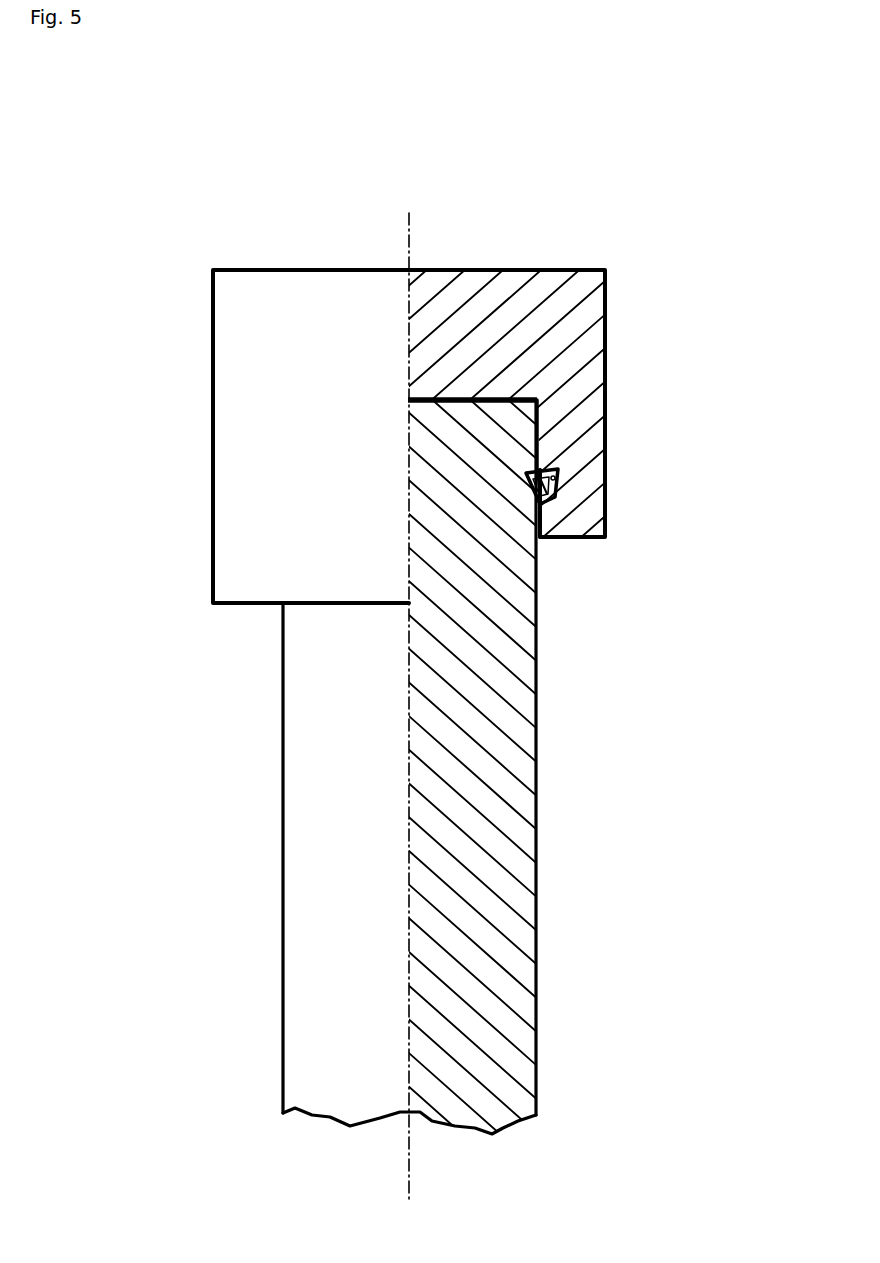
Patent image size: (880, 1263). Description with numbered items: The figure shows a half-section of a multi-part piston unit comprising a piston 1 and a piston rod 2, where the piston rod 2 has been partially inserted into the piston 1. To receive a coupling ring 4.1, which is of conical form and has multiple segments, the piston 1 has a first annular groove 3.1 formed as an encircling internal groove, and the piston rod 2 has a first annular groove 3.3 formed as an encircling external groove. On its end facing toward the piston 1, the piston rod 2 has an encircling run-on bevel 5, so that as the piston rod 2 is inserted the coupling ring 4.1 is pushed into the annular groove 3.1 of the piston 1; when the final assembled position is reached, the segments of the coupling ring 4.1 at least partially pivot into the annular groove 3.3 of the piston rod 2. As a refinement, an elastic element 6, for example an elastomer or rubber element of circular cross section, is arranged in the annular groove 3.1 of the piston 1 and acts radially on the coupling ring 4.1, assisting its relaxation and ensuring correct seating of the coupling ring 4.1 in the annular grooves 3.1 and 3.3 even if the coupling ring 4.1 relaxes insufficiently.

The piston 1 is at (575, 323).
The piston rod 2 is at (460, 822).
The first annular groove of the piston 3.1 is at (560, 497).
The first annular groove of the piston rod 3.3 is at (533, 487).
The coupling ring 4.1 is at (530, 490).
The run-on bevel 5 is at (526, 397).
The elastic element 6 is at (557, 483).